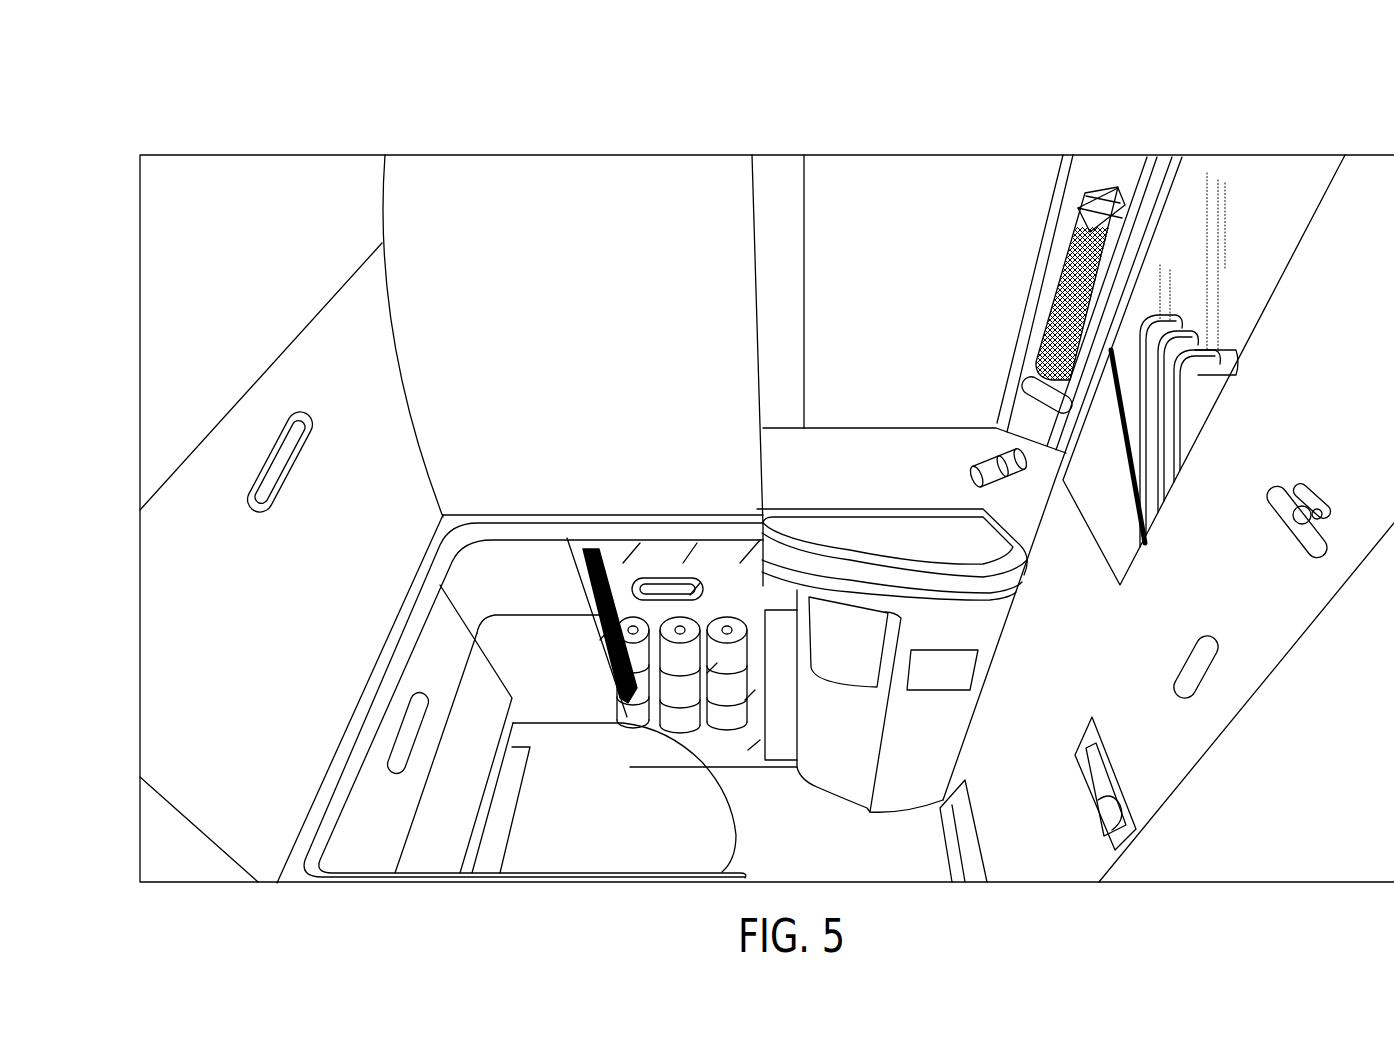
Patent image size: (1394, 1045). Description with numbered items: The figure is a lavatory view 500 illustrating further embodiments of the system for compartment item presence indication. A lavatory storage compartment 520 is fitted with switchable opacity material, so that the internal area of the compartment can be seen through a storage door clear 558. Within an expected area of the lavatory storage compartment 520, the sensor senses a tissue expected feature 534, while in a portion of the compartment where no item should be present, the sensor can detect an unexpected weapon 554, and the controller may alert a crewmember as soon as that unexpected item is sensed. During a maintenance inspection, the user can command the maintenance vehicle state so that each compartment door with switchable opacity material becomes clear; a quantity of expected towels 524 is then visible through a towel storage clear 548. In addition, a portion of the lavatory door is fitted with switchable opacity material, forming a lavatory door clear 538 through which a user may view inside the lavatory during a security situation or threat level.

The lavatory view 500 is at (152, 108).
The lavatory storage compartment 520 is at (578, 643).
The unexpected weapon 554 is at (585, 570).
The storage door clear 558 is at (673, 557).
The tissue expected feature 534 is at (725, 632).
The expected towels 524 is at (1076, 326).
The towel storage clear 548 is at (1113, 196).
The lavatory door clear 538 is at (1265, 196).